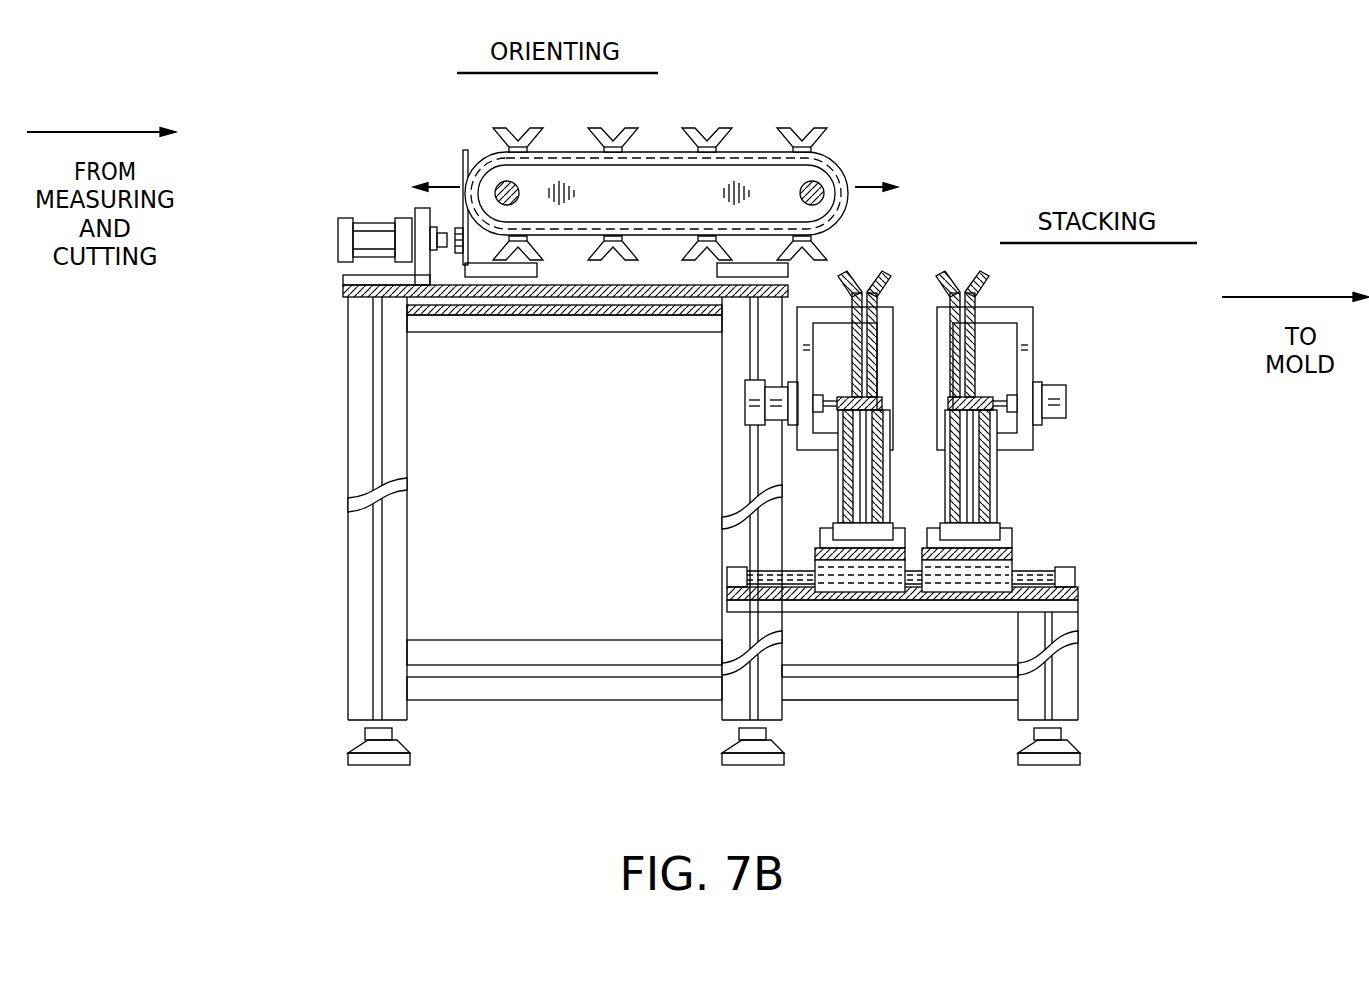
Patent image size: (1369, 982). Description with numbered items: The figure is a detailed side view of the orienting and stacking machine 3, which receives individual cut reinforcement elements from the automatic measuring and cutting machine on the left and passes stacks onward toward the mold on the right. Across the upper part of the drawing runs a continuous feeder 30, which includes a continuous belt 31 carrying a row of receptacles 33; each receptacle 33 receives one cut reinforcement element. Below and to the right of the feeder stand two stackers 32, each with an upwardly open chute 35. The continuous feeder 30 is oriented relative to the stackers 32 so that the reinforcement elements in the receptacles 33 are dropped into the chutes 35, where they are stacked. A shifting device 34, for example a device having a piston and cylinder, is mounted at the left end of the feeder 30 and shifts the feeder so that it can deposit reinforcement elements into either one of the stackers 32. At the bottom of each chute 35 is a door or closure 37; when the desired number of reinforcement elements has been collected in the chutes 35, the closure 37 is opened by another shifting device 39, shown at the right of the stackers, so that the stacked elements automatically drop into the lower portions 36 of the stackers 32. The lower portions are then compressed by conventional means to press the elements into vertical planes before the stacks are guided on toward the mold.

The orienting and stacking machine 3 is at (857, 135).
The continuous feeder 30 is at (705, 112).
The continuous belt 31 is at (563, 153).
The stackers 32 is at (865, 257).
The receptacles 33 is at (518, 136).
The shifting device 34 is at (378, 222).
The chutes 35 is at (988, 331).
The lower portions 36 is at (985, 510).
The door or closure 37 is at (987, 395).
The shifting device 39 is at (1066, 402).